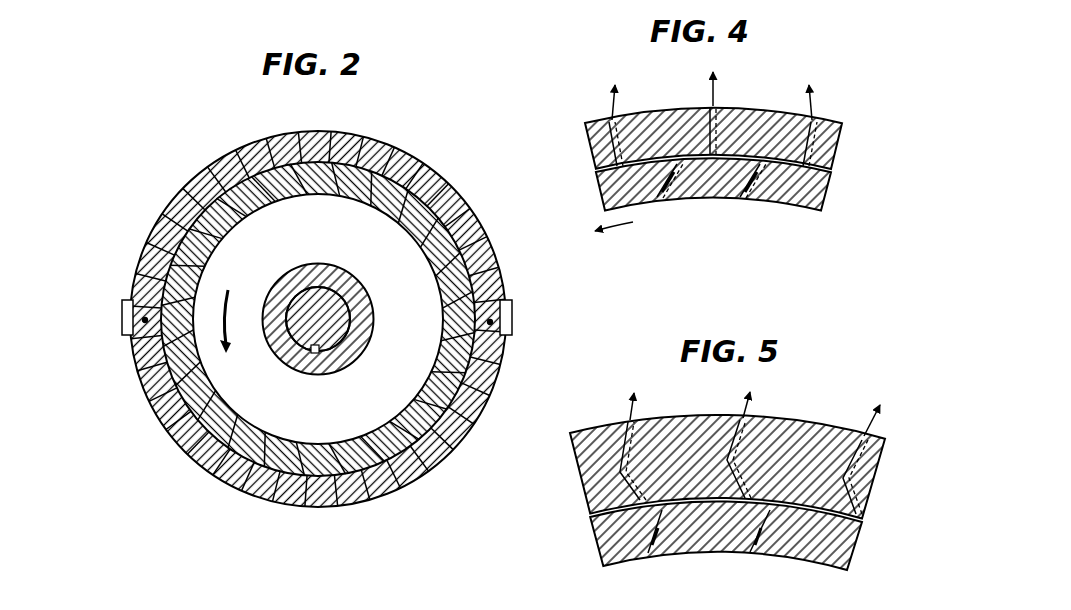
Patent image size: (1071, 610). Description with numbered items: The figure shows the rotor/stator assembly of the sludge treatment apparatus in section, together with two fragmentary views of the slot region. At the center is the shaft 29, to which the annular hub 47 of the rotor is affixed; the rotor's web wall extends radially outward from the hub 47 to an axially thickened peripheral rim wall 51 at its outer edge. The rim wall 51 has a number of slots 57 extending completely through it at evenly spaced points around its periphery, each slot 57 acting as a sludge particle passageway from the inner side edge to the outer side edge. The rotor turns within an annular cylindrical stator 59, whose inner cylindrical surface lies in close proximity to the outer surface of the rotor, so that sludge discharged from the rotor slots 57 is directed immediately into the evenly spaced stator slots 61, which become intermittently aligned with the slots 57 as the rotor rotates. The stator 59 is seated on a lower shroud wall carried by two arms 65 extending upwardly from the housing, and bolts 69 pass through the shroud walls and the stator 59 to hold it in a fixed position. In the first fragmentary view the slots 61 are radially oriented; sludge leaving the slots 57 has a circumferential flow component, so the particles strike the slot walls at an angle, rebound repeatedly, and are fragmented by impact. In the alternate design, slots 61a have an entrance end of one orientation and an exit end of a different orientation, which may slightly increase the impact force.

In FIG. 2, the shaft 29 is at (333, 306).
In FIG. 2, the annular hub 47 is at (358, 345).
In FIG. 2, the rim wall 51 is at (172, 368).
In FIG. 4, the rim wall 51 is at (612, 185).
In FIG. 5, the rim wall 51 is at (606, 540).
In FIG. 2, the slots 57 is at (352, 440).
In FIG. 4, the slots 57 is at (758, 194).
In FIG. 5, the slots 57 is at (648, 556).
In FIG. 2, the stator 59 is at (398, 146).
In FIG. 4, the stator 59 is at (752, 112).
In FIG. 5, the stator 59 is at (798, 420).
In FIG. 2, the stator slots 61 is at (249, 148).
In FIG. 4, the stator slots 61 is at (618, 117).
In FIG. 5, the slots 61a is at (636, 420).
In FIG. 2, the arms 65 is at (122, 309).
In FIG. 2, the bolts 69 is at (145, 321).